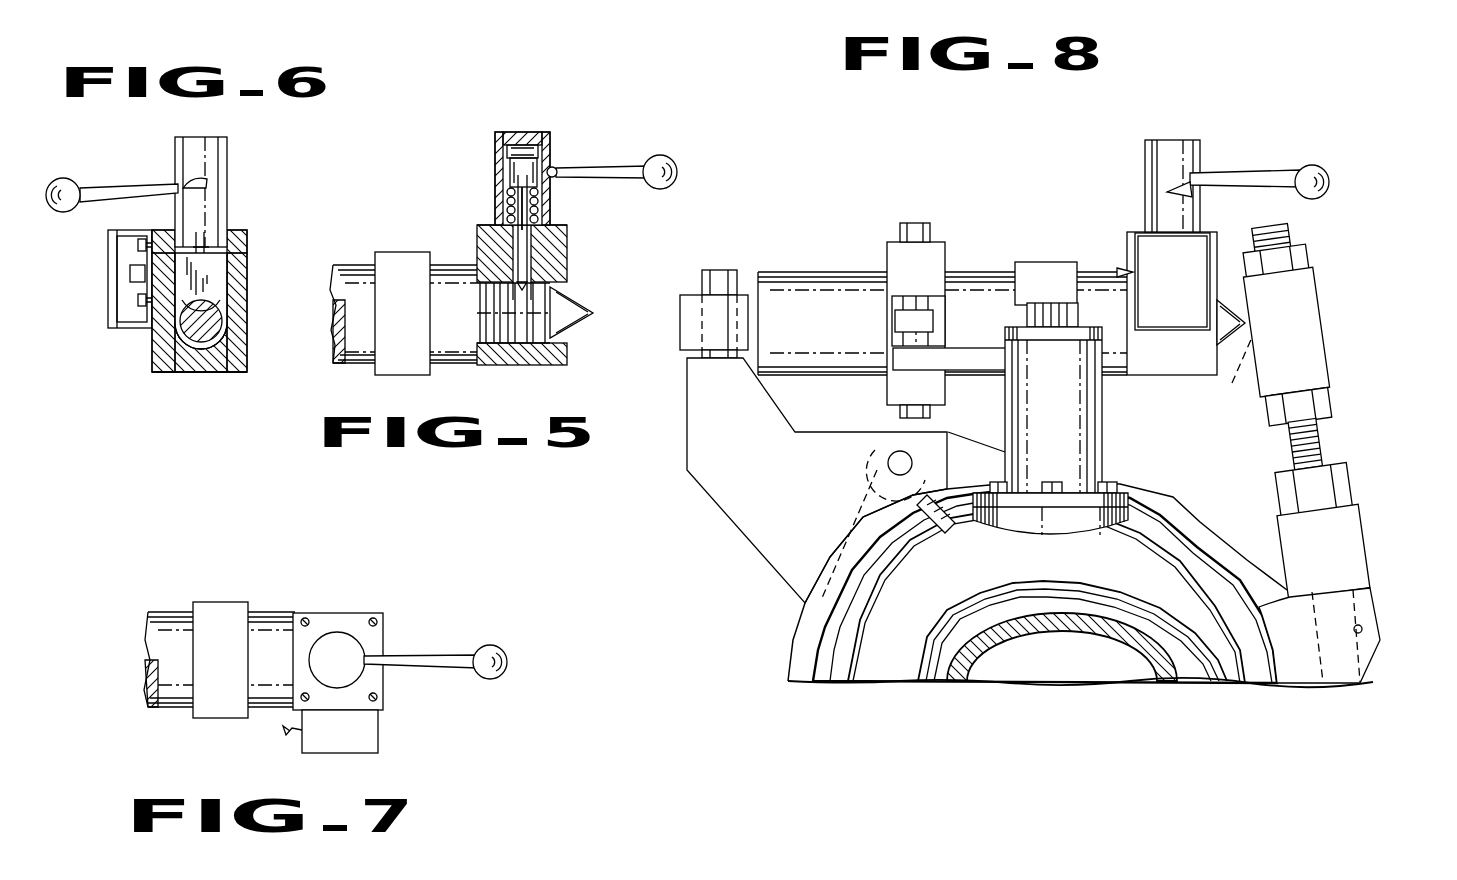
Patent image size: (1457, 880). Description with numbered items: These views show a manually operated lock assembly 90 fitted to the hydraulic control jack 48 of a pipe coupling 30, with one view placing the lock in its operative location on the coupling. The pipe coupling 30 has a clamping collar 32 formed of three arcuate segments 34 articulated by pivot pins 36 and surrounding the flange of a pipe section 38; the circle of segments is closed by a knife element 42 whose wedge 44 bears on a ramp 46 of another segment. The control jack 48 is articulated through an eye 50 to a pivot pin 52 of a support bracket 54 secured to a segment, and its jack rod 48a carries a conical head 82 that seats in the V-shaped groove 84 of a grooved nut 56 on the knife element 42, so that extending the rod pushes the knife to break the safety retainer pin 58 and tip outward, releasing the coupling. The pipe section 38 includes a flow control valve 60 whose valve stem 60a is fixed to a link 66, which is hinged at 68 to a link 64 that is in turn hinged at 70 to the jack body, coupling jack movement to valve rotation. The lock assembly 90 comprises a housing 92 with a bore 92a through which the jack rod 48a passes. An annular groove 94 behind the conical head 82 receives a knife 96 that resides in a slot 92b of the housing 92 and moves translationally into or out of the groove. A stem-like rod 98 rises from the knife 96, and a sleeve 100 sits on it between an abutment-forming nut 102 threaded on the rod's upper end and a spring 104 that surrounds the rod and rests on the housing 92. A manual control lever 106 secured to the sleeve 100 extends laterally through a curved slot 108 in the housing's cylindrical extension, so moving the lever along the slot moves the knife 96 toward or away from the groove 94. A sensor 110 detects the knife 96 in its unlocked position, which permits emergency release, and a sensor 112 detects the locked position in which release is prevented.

In FIG. 8, the pipe coupling 30 is at (1024, 585).
In FIG. 8, the clamping collar 32 is at (786, 666).
In FIG. 8, the arcuate segments 34 is at (1174, 492).
In FIG. 8, the pivot pins 36 is at (868, 467).
In FIG. 8, the pipe section 38 is at (957, 676).
In FIG. 8, the knife element 42 is at (1329, 401).
In FIG. 8, the wedge 44 is at (1350, 530).
In FIG. 8, the ramp 46 is at (1337, 633).
In FIG. 5, the hydraulic control jack 48 is at (461, 329).
In FIG. 7, the hydraulic control jack 48 is at (152, 642).
In FIG. 8, the hydraulic control jack 48 is at (824, 282).
In FIG. 5, the jack rod 48a is at (482, 332).
In FIG. 8, the eye 50 is at (712, 355).
In FIG. 8, the pivot pin 52 is at (719, 270).
In FIG. 8, the support bracket 54 is at (755, 477).
In FIG. 8, the grooved nut 56 is at (1312, 300).
In FIG. 8, the safety retainer pin 58 is at (1361, 634).
In FIG. 8, the flow control valve 60 is at (888, 678).
In FIG. 8, the valve stem 60a is at (1040, 303).
In FIG. 8, the link 64 is at (903, 318).
In FIG. 8, the link 66 is at (972, 365).
In FIG. 8, the hinge 68 is at (933, 297).
In FIG. 8, the hinge 70 is at (916, 226).
In FIG. 5, the conical head 82 is at (565, 300).
In FIG. 8, the conical head 82 is at (1225, 300).
In FIG. 8, the V-shaped groove 84 is at (1230, 376).
In FIG. 6, the lock assembly 90 is at (237, 195).
In FIG. 5, the lock assembly 90 is at (534, 241).
In FIG. 7, the lock assembly 90 is at (340, 612).
In FIG. 8, the lock assembly 90 is at (1138, 150).
In FIG. 6, the housing 92 is at (194, 314).
In FIG. 5, the housing 92 is at (526, 301).
In FIG. 8, the housing 92 is at (1179, 324).
In FIG. 6, the bore 92a is at (193, 362).
In FIG. 5, the bore 92a is at (560, 348).
In FIG. 6, the slot 92b is at (230, 252).
In FIG. 5, the slot 92b is at (512, 246).
In FIG. 6, the annular groove 94 is at (220, 337).
In FIG. 5, the annular groove 94 is at (520, 342).
In FIG. 6, the knife 96 is at (223, 262).
In FIG. 5, the knife 96 is at (530, 268).
In FIG. 6, the stem-like rod 98 is at (195, 246).
In FIG. 5, the stem-like rod 98 is at (540, 203).
In FIG. 5, the sleeve 100 is at (520, 174).
In FIG. 5, the abutment-forming nut 102 is at (508, 150).
In FIG. 5, the spring 104 is at (515, 205).
In FIG. 6, the manual control lever 106 is at (110, 187).
In FIG. 5, the manual control lever 106 is at (630, 170).
In FIG. 7, the manual control lever 106 is at (425, 657).
In FIG. 8, the manual control lever 106 is at (1256, 173).
In FIG. 6, the curved slot 108 is at (177, 185).
In FIG. 5, the curved slot 108 is at (557, 169).
In FIG. 8, the curved slot 108 is at (1168, 195).
In FIG. 6, the sensor 110 is at (140, 243).
In FIG. 6, the sensor 112 is at (140, 298).